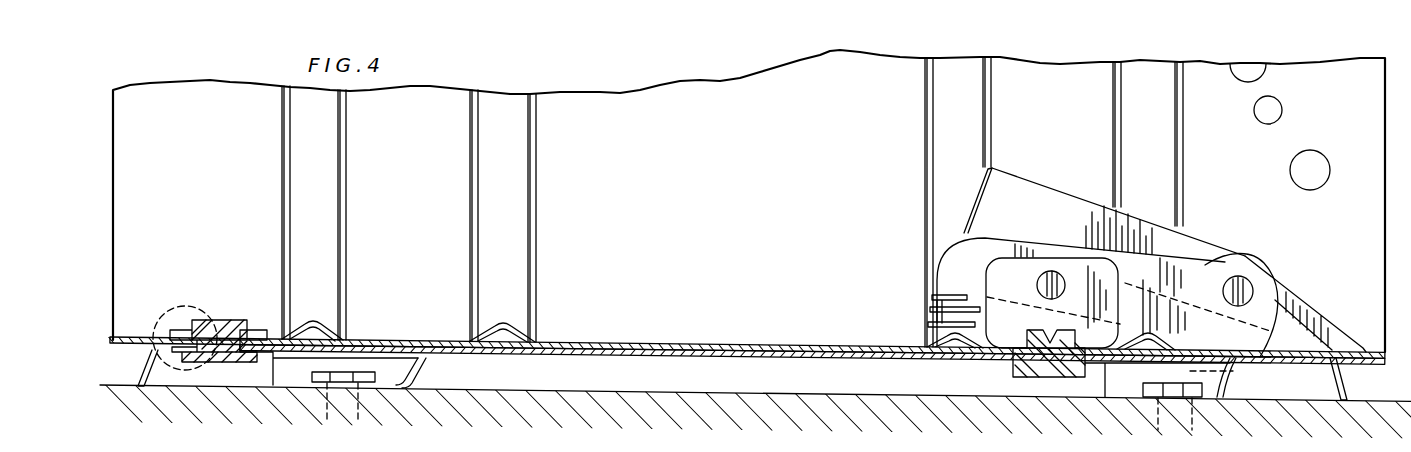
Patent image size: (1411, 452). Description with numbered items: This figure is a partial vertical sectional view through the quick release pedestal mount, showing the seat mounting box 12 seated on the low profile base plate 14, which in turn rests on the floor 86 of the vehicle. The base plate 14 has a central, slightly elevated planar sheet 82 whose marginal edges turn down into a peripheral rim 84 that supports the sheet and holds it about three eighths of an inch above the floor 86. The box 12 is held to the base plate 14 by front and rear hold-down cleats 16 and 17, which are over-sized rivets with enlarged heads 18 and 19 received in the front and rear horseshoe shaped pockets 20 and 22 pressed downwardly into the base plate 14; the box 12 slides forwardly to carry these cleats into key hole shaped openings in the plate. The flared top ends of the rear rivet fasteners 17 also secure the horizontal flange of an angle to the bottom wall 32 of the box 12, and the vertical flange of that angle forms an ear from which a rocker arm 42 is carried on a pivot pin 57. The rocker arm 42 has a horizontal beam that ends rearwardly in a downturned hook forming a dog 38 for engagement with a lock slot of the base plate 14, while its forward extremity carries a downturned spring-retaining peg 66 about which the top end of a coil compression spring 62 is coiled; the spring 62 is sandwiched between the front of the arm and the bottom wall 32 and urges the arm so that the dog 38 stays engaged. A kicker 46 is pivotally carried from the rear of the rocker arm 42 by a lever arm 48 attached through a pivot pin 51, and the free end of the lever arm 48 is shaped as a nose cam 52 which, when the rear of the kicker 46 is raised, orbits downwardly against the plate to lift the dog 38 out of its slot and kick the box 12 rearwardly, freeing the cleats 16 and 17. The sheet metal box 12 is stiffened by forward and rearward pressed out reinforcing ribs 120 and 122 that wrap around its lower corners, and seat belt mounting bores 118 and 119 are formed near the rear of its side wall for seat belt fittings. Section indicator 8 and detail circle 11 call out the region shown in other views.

The section line 8- 8 is at (129, 339).
The detail circle 11 is at (189, 307).
The seat mounting box 12 is at (701, 203).
The base plate 14 is at (1346, 382).
The hold-down cleat 16 is at (237, 319).
The hold-down cleat 17 is at (1082, 329).
The enlarged head 18 is at (238, 372).
The enlarged head 19 is at (1012, 372).
The pocket 20 is at (388, 365).
The pocket 22 is at (1232, 381).
The bottom wall 32 is at (599, 343).
The dog 38 is at (1205, 380).
The rocker arm 42 is at (1222, 265).
The kicker 46 is at (985, 197).
The lever arm 48 is at (1192, 225).
The pivot pin 51 is at (1250, 283).
The nose cam 52 is at (1362, 348).
The pivot pin 57 is at (1037, 286).
The coil compression spring 62 is at (925, 327).
The spring-retaining peg 66 is at (930, 302).
The planar sheet 82 is at (741, 360).
The peripheral rim 84 is at (150, 358).
The floor 86 is at (653, 392).
The seat belt mounting bore 118 is at (1233, 78).
The seat belt mounting bore 119 is at (1282, 111).
The reinforcing rib 120 is at (470, 176).
The reinforcing rib 122 is at (1113, 110).